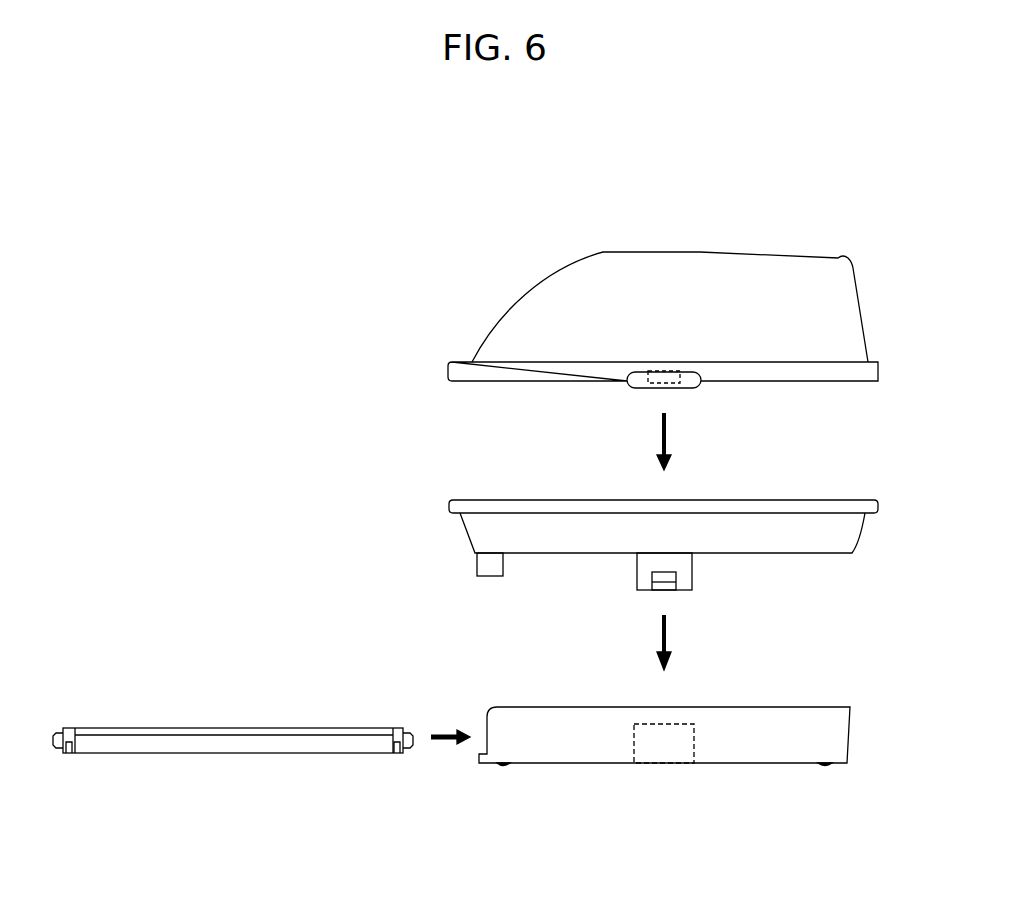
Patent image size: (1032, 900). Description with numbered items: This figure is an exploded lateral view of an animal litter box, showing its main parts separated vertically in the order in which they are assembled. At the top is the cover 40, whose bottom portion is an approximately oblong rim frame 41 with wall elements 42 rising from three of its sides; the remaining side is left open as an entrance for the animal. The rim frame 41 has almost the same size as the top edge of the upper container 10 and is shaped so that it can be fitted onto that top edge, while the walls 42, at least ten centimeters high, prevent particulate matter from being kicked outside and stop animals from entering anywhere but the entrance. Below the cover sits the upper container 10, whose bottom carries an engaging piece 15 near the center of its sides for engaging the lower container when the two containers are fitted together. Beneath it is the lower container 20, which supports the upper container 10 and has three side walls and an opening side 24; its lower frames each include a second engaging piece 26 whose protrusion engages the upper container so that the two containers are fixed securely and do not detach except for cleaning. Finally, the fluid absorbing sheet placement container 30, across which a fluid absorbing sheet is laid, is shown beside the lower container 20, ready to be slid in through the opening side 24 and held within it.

The upper container 10 is at (663, 499).
The engaging piece 15 is at (683, 574).
The lower container 20 is at (648, 699).
The opening side 24 is at (484, 724).
The second engaging piece 26 is at (680, 744).
The fluid absorbing sheet placement container 30 is at (315, 720).
The cover 40 is at (679, 254).
The rim frame 41 is at (879, 362).
The wall elements 42 is at (784, 300).